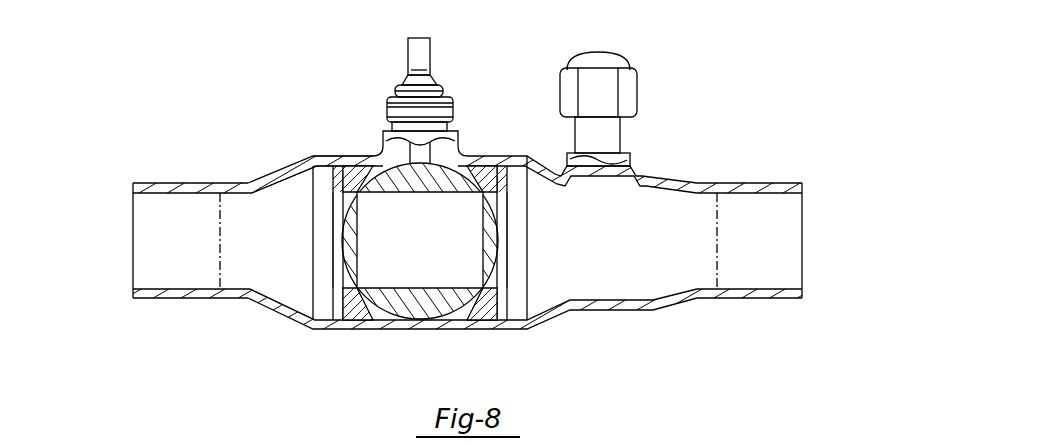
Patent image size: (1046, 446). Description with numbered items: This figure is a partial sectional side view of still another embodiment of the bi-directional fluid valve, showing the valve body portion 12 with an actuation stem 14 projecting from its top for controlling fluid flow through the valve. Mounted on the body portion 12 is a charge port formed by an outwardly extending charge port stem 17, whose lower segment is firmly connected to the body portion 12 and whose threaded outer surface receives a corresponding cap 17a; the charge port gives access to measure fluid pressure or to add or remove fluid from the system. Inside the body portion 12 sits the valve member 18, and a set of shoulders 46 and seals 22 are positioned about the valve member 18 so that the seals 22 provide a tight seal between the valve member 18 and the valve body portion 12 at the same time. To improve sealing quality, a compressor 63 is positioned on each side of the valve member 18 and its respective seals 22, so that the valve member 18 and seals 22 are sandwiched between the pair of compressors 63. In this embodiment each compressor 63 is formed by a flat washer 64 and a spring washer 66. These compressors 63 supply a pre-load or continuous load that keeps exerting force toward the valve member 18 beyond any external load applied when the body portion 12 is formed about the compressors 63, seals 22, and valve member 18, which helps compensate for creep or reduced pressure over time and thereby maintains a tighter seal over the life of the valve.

The valve body portion 12 is at (363, 164).
The actuation stem 14 is at (421, 52).
The charge port stem 17 is at (625, 140).
The cap 17a is at (600, 85).
The valve member 18 is at (433, 297).
The seal 22 is at (349, 164).
The shoulder 46 is at (312, 162).
The compressor 63 is at (514, 183).
The flat washer 64 is at (318, 193).
The spring washer 66 is at (307, 167).